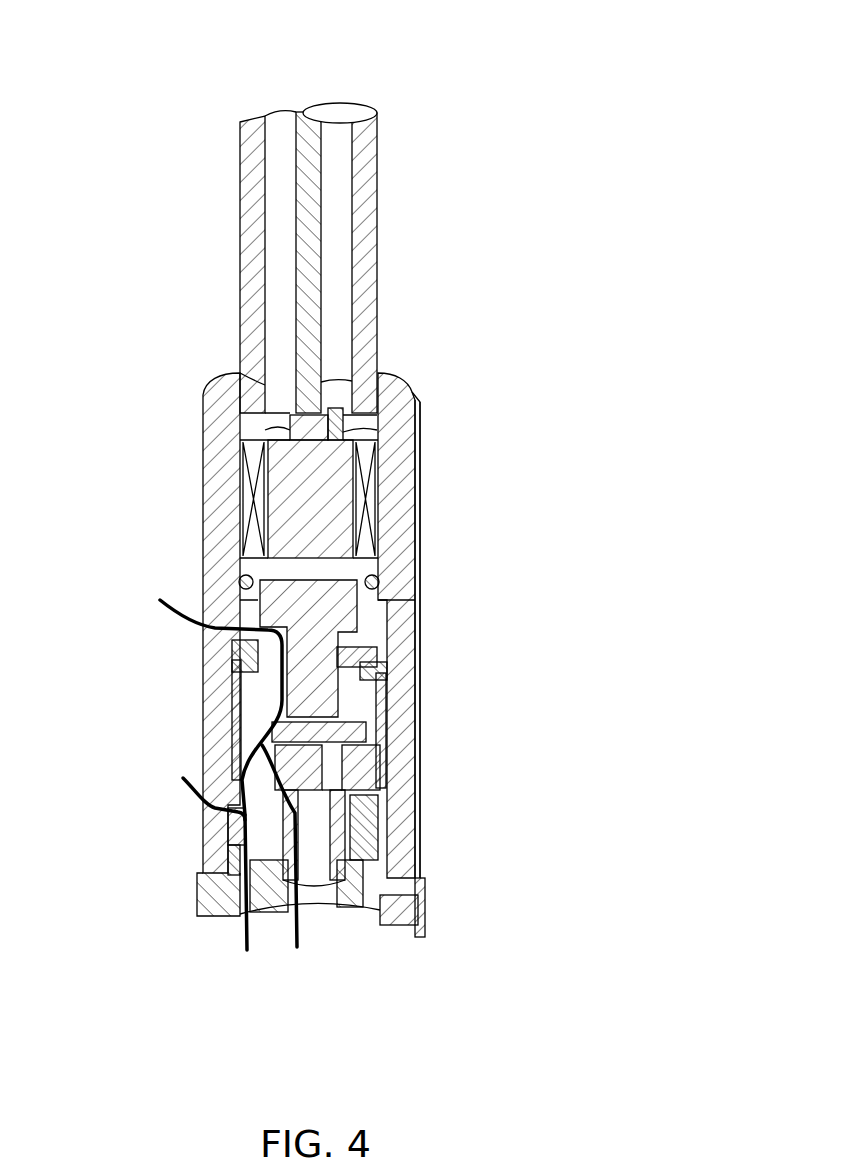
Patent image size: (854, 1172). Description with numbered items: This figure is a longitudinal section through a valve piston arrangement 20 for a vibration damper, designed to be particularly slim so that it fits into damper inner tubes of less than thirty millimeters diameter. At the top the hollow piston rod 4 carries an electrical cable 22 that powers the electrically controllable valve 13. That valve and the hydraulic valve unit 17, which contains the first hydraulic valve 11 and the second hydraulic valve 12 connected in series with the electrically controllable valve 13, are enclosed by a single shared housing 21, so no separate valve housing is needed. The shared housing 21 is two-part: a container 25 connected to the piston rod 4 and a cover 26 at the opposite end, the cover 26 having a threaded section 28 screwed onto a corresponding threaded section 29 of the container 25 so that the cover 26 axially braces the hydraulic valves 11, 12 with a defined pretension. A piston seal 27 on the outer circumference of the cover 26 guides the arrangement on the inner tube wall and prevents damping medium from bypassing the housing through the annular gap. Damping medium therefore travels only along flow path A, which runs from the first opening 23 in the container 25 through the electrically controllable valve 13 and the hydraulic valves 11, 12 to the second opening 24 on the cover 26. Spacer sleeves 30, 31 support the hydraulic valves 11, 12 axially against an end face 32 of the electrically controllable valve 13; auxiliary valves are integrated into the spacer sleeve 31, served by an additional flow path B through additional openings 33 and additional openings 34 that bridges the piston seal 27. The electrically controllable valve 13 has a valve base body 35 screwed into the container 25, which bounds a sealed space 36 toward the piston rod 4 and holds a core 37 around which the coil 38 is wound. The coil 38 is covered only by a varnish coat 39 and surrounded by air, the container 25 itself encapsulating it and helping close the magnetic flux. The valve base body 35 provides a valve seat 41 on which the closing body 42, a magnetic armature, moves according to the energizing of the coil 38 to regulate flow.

The valve piston arrangement 20 is at (398, 70).
The piston rod 4 is at (365, 170).
The electrical cable 22 is at (313, 234).
The space 36 is at (360, 423).
The shared housing 21 is at (400, 437).
The core 37 is at (335, 466).
The electrically controllable valve 13 is at (320, 512).
The coil 38 is at (253, 477).
The container 25 is at (222, 497).
The varnish coat 39 is at (239, 533).
The valve base body 35 is at (248, 593).
The closing body 42 is at (318, 606).
The flow path A is at (205, 627).
The first opening 23 is at (213, 637).
The valve seat 41 is at (362, 657).
The end face 32 is at (373, 670).
The spacer sleeve 30 is at (380, 707).
The second hydraulic valve 12 is at (247, 745).
The hydraulic valve unit 17 is at (313, 740).
The first hydraulic valve 11 is at (345, 767).
The spacer sleeve 31 is at (378, 802).
The flow path B is at (215, 810).
The additional openings 33 is at (215, 853).
The threaded section 29 is at (235, 868).
The piston seal 27 is at (418, 893).
The threaded section 28 is at (203, 912).
The cover 26 is at (398, 917).
The additional openings 34 is at (253, 885).
The second opening 24 is at (320, 887).